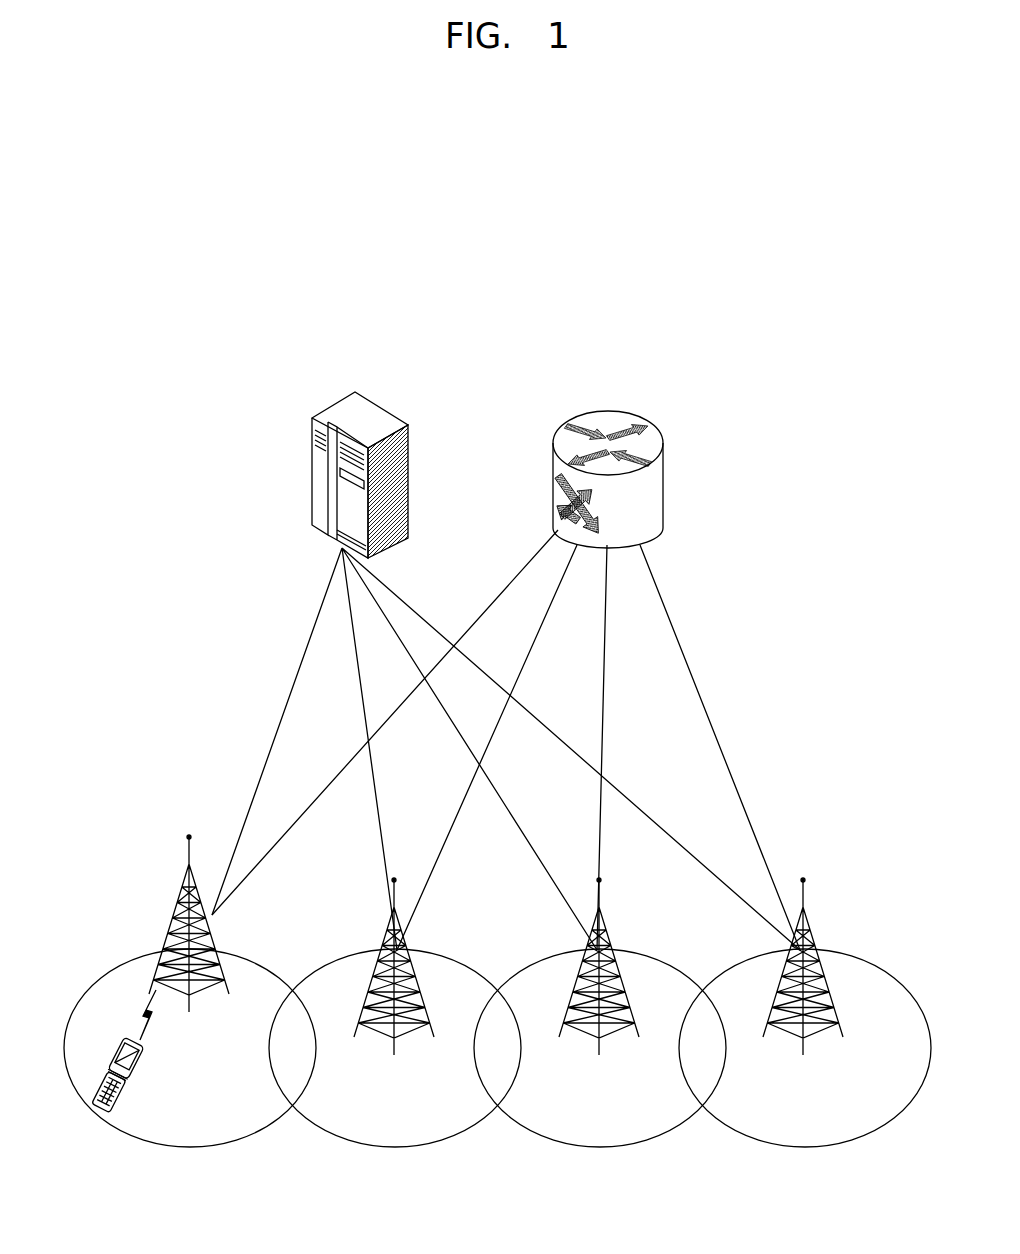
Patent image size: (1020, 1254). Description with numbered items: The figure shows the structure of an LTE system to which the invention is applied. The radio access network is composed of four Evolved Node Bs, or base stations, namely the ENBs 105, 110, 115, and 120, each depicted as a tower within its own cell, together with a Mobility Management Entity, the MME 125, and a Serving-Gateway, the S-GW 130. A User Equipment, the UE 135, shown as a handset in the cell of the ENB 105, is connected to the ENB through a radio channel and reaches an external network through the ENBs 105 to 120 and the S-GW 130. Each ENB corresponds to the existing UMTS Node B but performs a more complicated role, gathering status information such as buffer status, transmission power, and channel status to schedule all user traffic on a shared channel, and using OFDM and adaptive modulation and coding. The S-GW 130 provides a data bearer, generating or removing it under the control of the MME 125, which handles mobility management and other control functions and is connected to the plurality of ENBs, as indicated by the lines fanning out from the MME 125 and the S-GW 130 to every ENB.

The Evolved Node B 105 is at (177, 900).
The Evolved Node B 110 is at (390, 927).
The Evolved Node B 115 is at (608, 927).
The Evolved Node B 120 is at (812, 927).
The Mobility Management Entity 125 is at (343, 415).
The Serving-Gateway 130 is at (607, 420).
The User Equipment 135 is at (140, 1068).